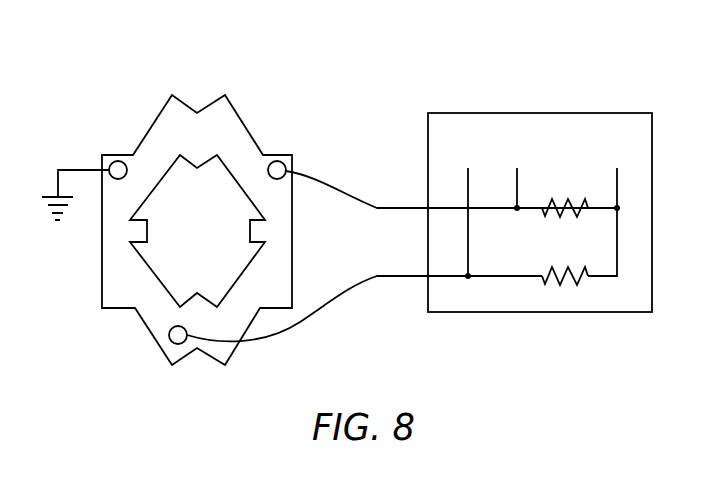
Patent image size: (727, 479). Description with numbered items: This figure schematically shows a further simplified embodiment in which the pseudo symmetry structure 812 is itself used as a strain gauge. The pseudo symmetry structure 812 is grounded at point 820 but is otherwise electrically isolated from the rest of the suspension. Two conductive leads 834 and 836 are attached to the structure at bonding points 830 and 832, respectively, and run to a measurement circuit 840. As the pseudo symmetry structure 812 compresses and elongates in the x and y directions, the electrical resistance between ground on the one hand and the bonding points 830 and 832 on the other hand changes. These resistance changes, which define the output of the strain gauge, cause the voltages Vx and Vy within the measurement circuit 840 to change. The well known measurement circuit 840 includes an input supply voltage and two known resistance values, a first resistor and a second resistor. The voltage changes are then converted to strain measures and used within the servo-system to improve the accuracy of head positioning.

The pseudo symmetry structure 812 is at (207, 86).
The ground point 820 is at (118, 161).
The bonding point 830 is at (277, 161).
The bonding point 832 is at (169, 336).
The conductive lead 834 is at (391, 207).
The conductive lead 836 is at (398, 275).
The measurement circuit 840 is at (505, 113).